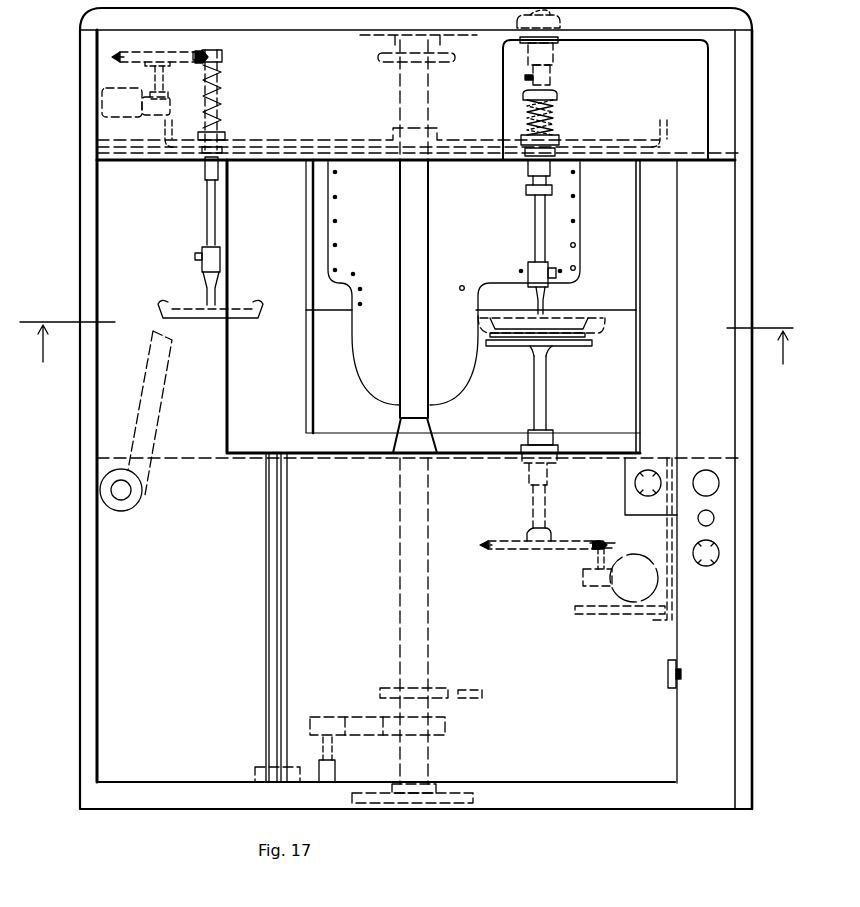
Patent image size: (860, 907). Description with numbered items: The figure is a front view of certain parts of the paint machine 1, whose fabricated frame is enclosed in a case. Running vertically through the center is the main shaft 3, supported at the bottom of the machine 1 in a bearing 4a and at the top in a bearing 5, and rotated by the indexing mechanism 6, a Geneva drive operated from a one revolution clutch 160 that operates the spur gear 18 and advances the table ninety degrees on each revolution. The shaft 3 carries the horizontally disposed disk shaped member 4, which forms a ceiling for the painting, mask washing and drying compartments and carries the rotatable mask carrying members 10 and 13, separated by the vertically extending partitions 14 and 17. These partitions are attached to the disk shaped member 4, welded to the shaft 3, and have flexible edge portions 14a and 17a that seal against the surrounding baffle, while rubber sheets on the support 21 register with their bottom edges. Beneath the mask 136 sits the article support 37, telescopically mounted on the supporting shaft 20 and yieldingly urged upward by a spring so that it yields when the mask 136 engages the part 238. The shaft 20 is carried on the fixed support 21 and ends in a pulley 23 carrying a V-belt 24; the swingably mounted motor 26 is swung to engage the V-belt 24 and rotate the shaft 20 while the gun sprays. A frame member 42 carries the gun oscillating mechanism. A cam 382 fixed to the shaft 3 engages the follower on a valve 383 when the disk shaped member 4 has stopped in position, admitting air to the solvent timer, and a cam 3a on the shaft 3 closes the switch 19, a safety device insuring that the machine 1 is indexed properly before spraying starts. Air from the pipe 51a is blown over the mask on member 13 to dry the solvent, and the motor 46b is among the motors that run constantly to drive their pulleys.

The paint machine 1 is at (752, 566).
The shaft 3 is at (430, 230).
The cam 3a is at (406, 355).
The disk shaped member 4 is at (278, 163).
The bearing 4a is at (433, 783).
The bearing 5 is at (394, 39).
The indexing mechanism 6 is at (352, 718).
The rotatable mask carrying member 10 is at (548, 122).
The rotatable mask carrying member 13 is at (217, 108).
The partition 14 is at (528, 237).
The flexible edge portion 14a is at (612, 234).
The partition 17 is at (370, 239).
The flexible edge portion 17a is at (329, 297).
The spur gear 18 is at (312, 776).
The switch 19 is at (394, 62).
The supporting shaft 20 is at (534, 418).
The support 21 is at (590, 453).
The pulley 23 is at (550, 534).
The V-belt 24 is at (510, 552).
The motor 26 is at (628, 554).
The article support 37 is at (592, 346).
The frame member 42 is at (680, 292).
The motor 46b is at (120, 117).
The pipe 51a is at (141, 498).
The mask 136 is at (584, 316).
The one revolution clutch 160 is at (258, 768).
The part 238 is at (479, 315).
The cam 382 is at (438, 690).
The valve 383 is at (487, 690).